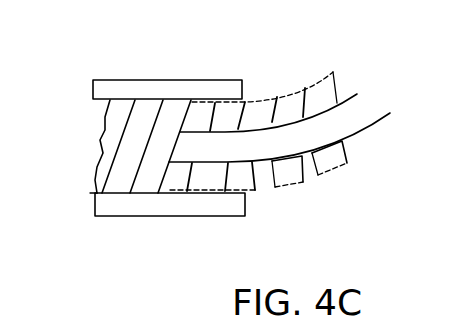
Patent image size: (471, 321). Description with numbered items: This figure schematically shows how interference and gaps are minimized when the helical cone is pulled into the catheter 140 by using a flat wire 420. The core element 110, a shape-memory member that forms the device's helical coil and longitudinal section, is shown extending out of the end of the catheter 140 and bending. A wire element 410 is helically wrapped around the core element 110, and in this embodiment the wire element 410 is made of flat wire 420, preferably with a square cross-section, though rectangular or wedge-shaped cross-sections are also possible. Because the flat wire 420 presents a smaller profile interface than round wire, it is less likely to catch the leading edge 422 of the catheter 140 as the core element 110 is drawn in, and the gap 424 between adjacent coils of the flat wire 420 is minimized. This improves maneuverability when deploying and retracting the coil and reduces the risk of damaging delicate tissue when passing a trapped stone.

The wire element 410 is at (68, 150).
The catheter 140 is at (158, 83).
The core element 110 is at (373, 95).
The leading edge 422 is at (254, 77).
The gap 424 is at (310, 190).
The flat wire 420 is at (345, 148).